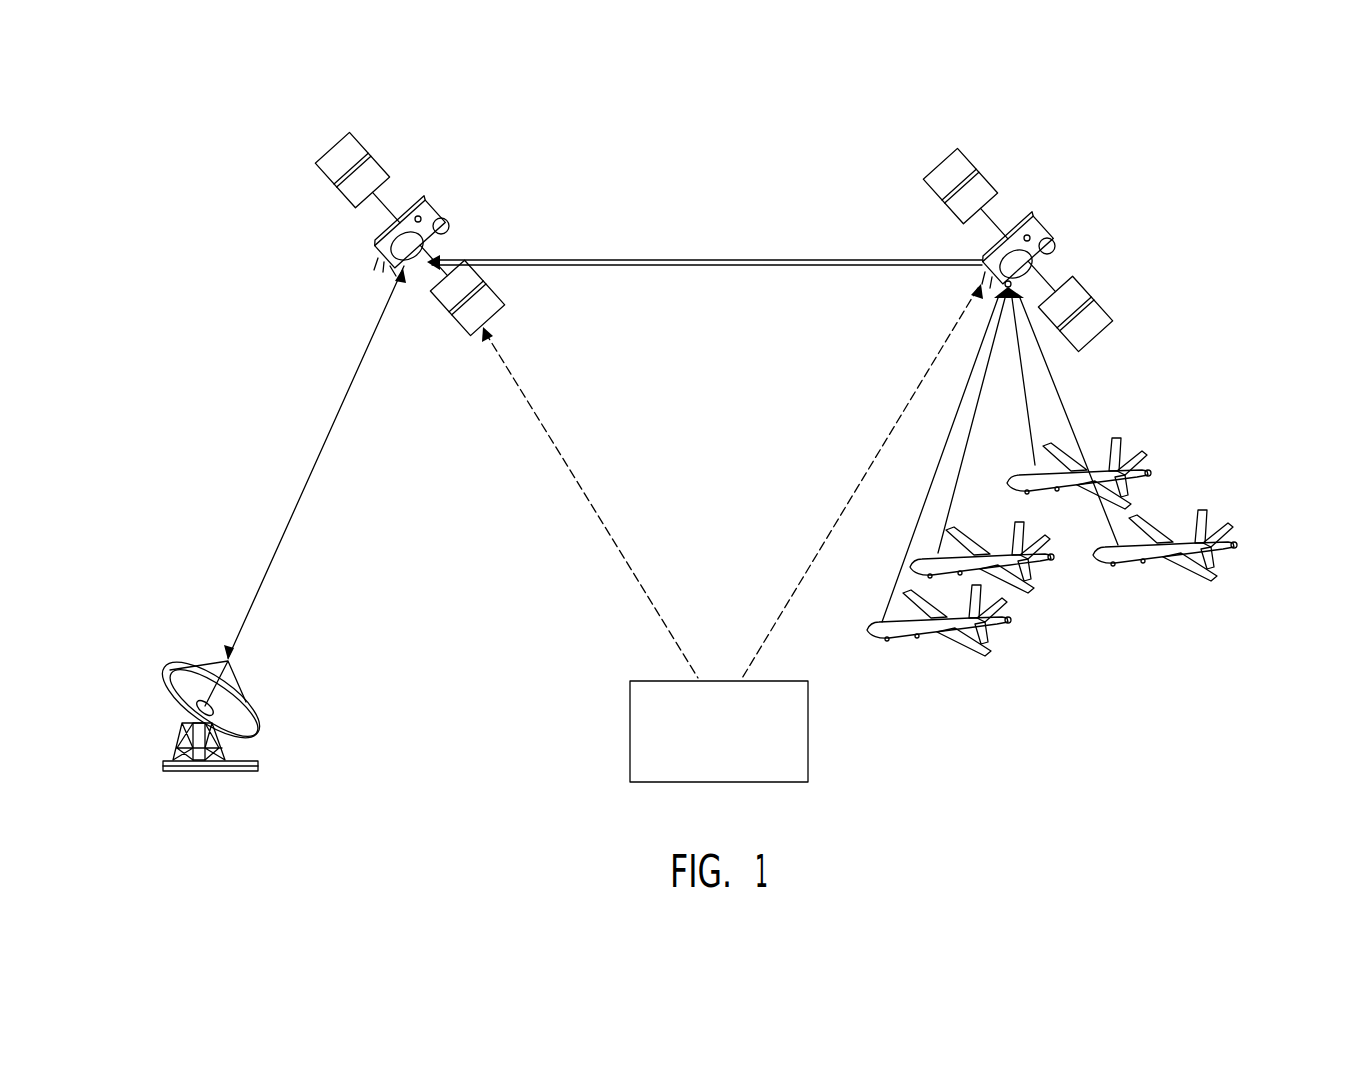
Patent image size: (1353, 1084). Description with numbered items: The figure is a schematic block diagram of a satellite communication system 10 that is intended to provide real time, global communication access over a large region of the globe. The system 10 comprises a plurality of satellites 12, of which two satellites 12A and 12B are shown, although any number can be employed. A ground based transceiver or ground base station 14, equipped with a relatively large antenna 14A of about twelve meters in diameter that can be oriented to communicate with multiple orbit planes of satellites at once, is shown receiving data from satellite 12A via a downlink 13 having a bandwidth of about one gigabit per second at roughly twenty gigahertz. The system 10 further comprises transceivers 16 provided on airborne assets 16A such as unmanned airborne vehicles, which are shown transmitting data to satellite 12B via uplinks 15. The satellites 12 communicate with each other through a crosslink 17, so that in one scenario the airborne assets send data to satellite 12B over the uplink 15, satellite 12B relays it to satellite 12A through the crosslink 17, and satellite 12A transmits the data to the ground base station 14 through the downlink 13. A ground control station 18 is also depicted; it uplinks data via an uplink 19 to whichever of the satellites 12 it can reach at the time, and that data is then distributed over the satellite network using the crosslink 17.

The satellite communication system 10 is at (812, 103).
The satellites 12 is at (441, 160).
The satellite 12A is at (447, 220).
The satellite 12B is at (1058, 236).
The downlink 13 is at (308, 470).
The ground base station 14 is at (207, 775).
The antenna 14A is at (258, 736).
The uplink 15 is at (1058, 392).
The transceivers 16 is at (1098, 656).
The airborne assets 16A is at (1130, 500).
The crosslink 17 is at (722, 256).
The ground control station 18 is at (810, 732).
The uplink 19 is at (588, 494).